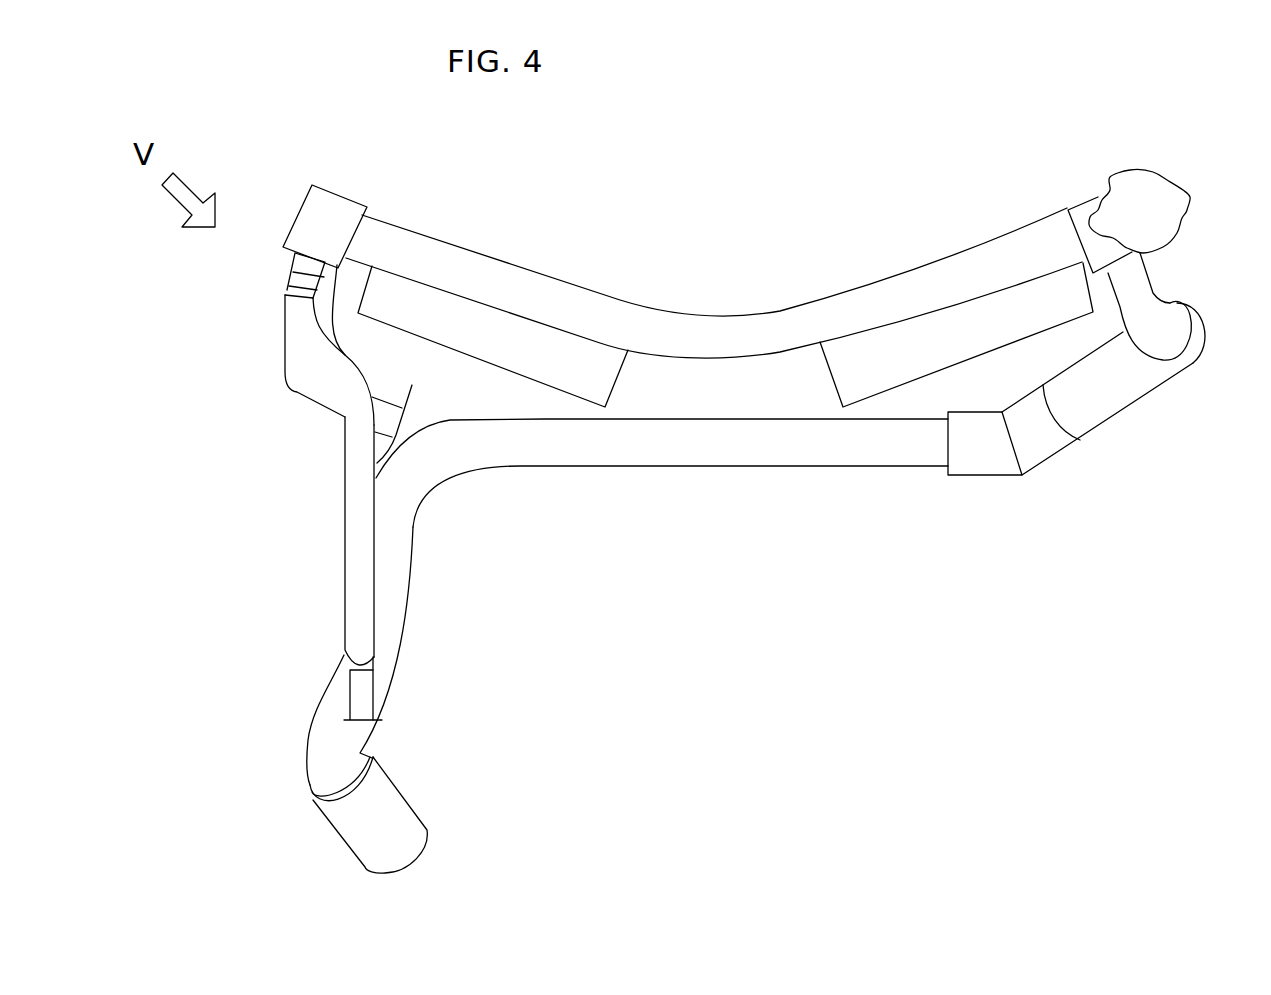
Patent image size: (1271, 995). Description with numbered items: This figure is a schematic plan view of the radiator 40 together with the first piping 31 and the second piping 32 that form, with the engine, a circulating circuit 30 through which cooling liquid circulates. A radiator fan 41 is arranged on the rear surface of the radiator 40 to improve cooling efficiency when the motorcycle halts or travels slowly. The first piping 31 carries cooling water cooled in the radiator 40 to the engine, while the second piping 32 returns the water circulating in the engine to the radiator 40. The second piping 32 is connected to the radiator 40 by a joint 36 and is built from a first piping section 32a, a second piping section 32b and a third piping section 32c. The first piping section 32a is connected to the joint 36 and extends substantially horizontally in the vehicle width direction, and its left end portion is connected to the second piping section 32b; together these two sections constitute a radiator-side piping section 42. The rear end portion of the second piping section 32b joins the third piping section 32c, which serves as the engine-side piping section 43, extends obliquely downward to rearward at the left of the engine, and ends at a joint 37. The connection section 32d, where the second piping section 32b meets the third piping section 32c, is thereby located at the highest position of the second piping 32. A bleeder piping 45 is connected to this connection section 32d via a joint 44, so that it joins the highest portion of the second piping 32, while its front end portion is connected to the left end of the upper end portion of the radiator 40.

The circulating circuit 30 is at (1128, 447).
The first piping 31 is at (296, 393).
The second piping 32 is at (575, 646).
The first piping section 32a is at (693, 470).
The second piping section 32b is at (420, 563).
The third piping section 32c is at (305, 763).
The connection section 32d is at (395, 680).
The joint 36 is at (1148, 410).
The joint 37 is at (400, 787).
The radiator 40 is at (697, 313).
The radiator fan 41 is at (926, 330).
The radiator-side piping section 42 is at (602, 484).
The engine-side piping section 43 is at (282, 737).
The joint 44 is at (380, 668).
The bleeder piping 45 is at (343, 517).